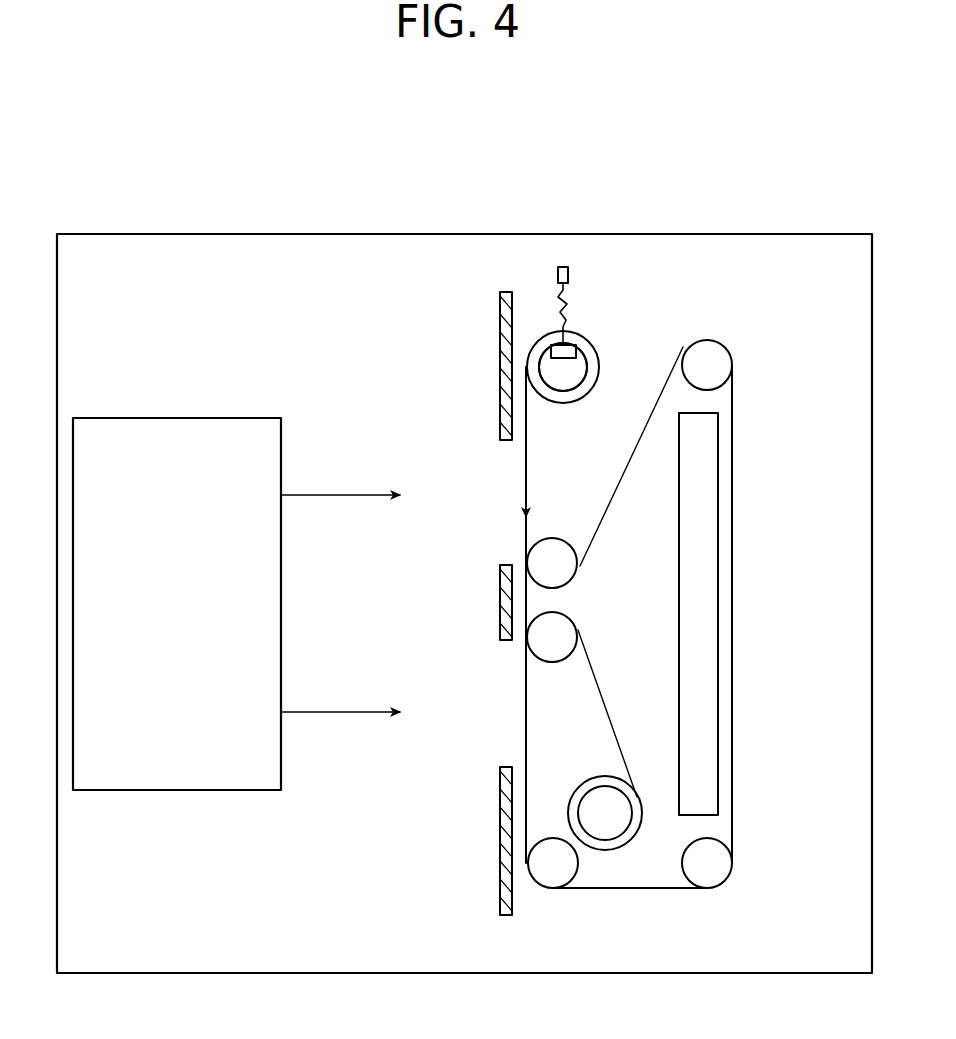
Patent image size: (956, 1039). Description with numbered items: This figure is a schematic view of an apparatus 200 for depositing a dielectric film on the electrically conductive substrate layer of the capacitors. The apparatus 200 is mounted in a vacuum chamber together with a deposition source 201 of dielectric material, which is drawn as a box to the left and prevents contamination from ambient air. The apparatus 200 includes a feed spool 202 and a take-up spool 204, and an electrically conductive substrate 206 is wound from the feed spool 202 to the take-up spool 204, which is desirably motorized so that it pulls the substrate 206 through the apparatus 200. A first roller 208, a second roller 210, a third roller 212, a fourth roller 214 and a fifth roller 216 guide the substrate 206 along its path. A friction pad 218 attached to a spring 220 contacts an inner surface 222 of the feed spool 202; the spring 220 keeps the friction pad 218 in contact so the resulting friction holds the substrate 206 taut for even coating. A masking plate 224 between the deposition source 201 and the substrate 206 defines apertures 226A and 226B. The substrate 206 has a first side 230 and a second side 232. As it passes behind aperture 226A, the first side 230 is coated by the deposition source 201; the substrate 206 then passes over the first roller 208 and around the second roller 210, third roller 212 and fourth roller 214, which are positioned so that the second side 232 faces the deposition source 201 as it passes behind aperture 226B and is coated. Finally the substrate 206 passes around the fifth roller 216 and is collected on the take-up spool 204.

The apparatus 200 is at (340, 205).
The deposition source 201 is at (186, 421).
The feed spool 202 is at (543, 357).
The take-up spool 204 is at (610, 830).
The electrically conductive substrate 206 is at (633, 445).
The first roller 208 is at (565, 577).
The second roller 210 is at (717, 366).
The third roller 212 is at (720, 863).
The fourth roller 214 is at (552, 878).
The fifth roller 216 is at (568, 634).
The friction pad 218 is at (573, 350).
The spring 220 is at (565, 300).
The inner surface 222 is at (590, 365).
The masking plate 224 is at (500, 352).
The aperture 226A is at (507, 475).
The aperture 226B is at (505, 700).
The first side 230 is at (527, 497).
The second side 232 is at (527, 480).